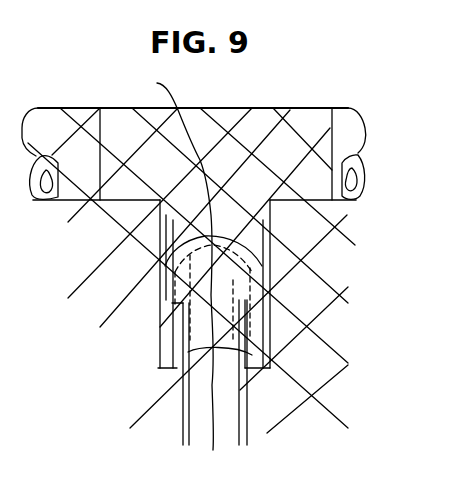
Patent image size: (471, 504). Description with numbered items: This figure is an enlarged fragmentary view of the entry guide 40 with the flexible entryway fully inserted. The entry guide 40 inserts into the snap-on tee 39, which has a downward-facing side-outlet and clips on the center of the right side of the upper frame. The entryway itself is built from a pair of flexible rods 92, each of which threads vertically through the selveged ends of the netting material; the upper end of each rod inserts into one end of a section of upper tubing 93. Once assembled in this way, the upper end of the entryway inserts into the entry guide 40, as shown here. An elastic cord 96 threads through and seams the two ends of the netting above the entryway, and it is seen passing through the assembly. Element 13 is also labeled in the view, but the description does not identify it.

The cap plate 13 is at (347, 130).
The snap-on tee 39 is at (278, 216).
The entry guide 40 is at (157, 296).
The flexible rods 92 is at (250, 432).
The upper tubing 93 is at (160, 330).
The elastic cord 96 is at (157, 83).